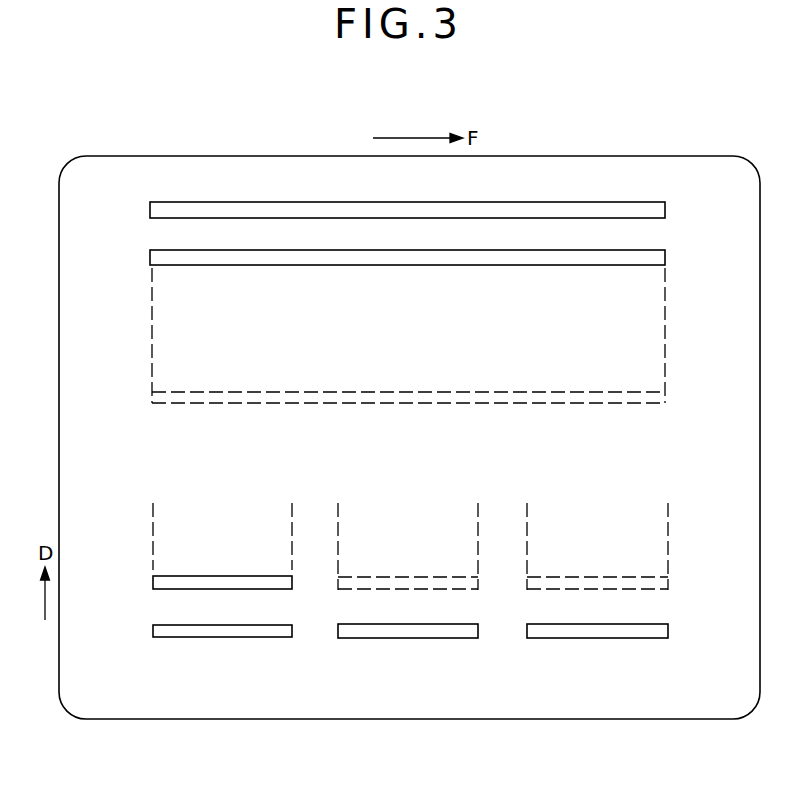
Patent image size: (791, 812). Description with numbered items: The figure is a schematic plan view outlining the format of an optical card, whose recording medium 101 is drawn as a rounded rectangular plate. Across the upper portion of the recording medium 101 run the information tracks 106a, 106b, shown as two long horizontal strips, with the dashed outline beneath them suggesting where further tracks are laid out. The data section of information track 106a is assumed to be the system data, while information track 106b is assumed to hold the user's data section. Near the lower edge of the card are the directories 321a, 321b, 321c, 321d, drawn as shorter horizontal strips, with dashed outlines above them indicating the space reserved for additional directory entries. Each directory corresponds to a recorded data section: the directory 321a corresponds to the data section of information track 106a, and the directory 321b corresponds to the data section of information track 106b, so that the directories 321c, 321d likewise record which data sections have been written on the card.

The recording medium 101 is at (733, 720).
The information track 106a is at (665, 212).
The information track 106b is at (665, 258).
The directory 321a is at (202, 637).
The directory 321b is at (398, 638).
The directory 321c is at (587, 638).
The directory 321d is at (198, 589).